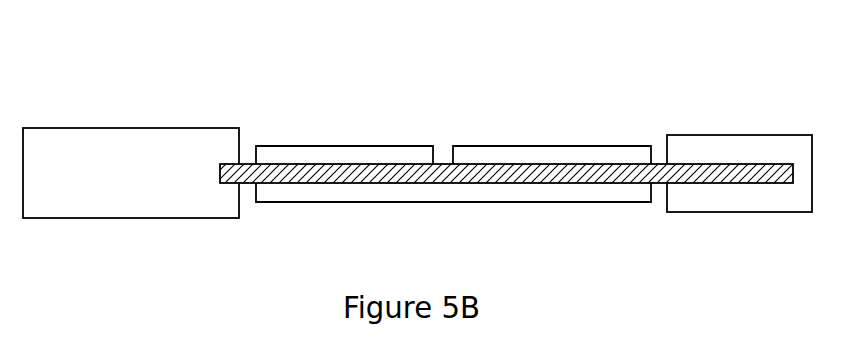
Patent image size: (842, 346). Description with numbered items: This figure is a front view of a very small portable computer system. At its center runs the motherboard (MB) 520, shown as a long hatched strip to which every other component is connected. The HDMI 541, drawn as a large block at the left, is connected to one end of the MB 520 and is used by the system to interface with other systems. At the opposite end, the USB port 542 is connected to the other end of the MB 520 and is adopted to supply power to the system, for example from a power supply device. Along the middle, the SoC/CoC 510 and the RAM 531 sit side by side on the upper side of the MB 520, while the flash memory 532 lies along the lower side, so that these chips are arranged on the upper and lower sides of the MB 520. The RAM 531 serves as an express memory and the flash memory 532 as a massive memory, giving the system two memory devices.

The HDMI 541 is at (135, 148).
The SoC/CoC 510 is at (355, 148).
The motherboard (MB) 520 is at (442, 162).
The RAM 531 is at (563, 148).
The flash memory 532 is at (503, 202).
The USB port 542 is at (772, 140).